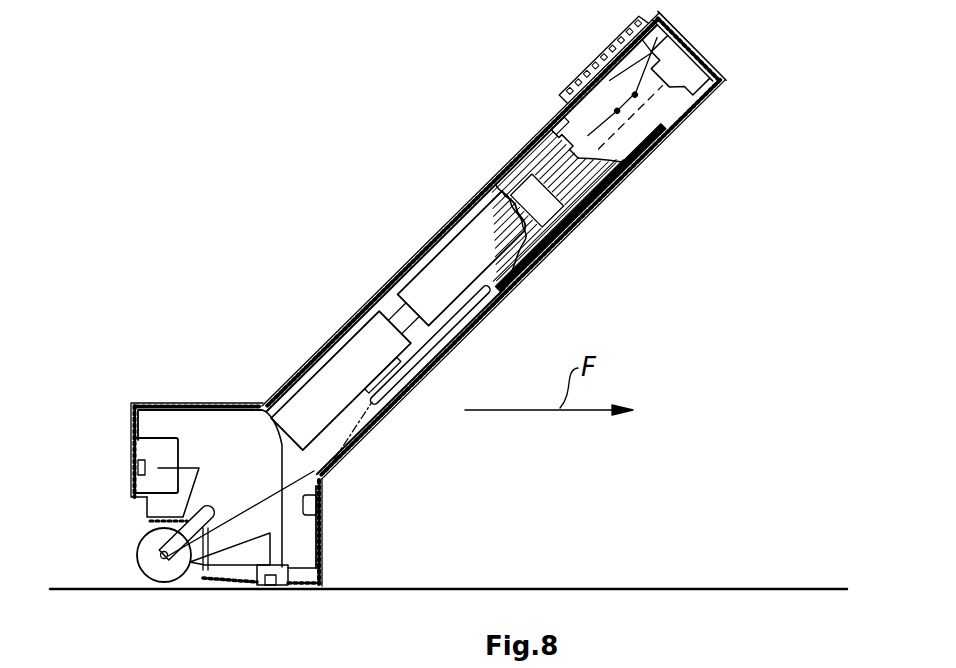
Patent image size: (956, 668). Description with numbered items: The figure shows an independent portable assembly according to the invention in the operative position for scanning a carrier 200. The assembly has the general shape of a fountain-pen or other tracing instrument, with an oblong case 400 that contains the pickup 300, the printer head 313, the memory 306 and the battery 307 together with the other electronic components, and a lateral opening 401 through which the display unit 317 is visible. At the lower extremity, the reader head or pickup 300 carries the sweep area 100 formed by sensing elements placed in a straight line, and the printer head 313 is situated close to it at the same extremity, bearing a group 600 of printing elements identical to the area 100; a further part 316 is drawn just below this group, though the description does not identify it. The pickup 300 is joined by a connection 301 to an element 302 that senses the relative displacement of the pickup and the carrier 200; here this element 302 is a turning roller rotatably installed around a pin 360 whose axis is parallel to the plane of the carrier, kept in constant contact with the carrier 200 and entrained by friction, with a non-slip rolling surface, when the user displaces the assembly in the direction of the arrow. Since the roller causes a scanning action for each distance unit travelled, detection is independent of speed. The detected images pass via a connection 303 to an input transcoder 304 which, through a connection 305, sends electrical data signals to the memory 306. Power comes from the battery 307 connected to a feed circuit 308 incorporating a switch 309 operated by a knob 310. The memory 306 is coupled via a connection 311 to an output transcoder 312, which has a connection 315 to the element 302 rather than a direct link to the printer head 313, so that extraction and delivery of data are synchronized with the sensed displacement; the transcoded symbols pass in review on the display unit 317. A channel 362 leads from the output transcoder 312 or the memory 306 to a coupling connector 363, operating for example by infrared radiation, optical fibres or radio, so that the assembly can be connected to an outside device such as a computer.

The sweep area 100 is at (272, 593).
The carrier 200 is at (452, 581).
The pickup 300 is at (253, 590).
The connection 301 is at (207, 565).
The element sensing relative displacement 302 is at (140, 554).
The connection 303 is at (262, 409).
The input transcoder 304 is at (350, 357).
The connection 305 is at (386, 291).
The memory 306 is at (495, 189).
The battery 307 is at (702, 60).
The feed circuit 308 is at (584, 133).
The switch 309 is at (624, 112).
The knob 310 is at (593, 73).
The connection 311 is at (502, 303).
The output transcoder 312 is at (454, 329).
The printer head 313 is at (131, 409).
The connection 315 is at (322, 489).
The funnel 316 is at (141, 497).
The display unit 317 is at (540, 262).
The pin 360 is at (151, 580).
The channel 362 is at (355, 448).
The coupling connector 363 is at (320, 504).
The oblong case 400 is at (430, 240).
The lateral opening 401 is at (584, 228).
The group 600 is at (134, 463).